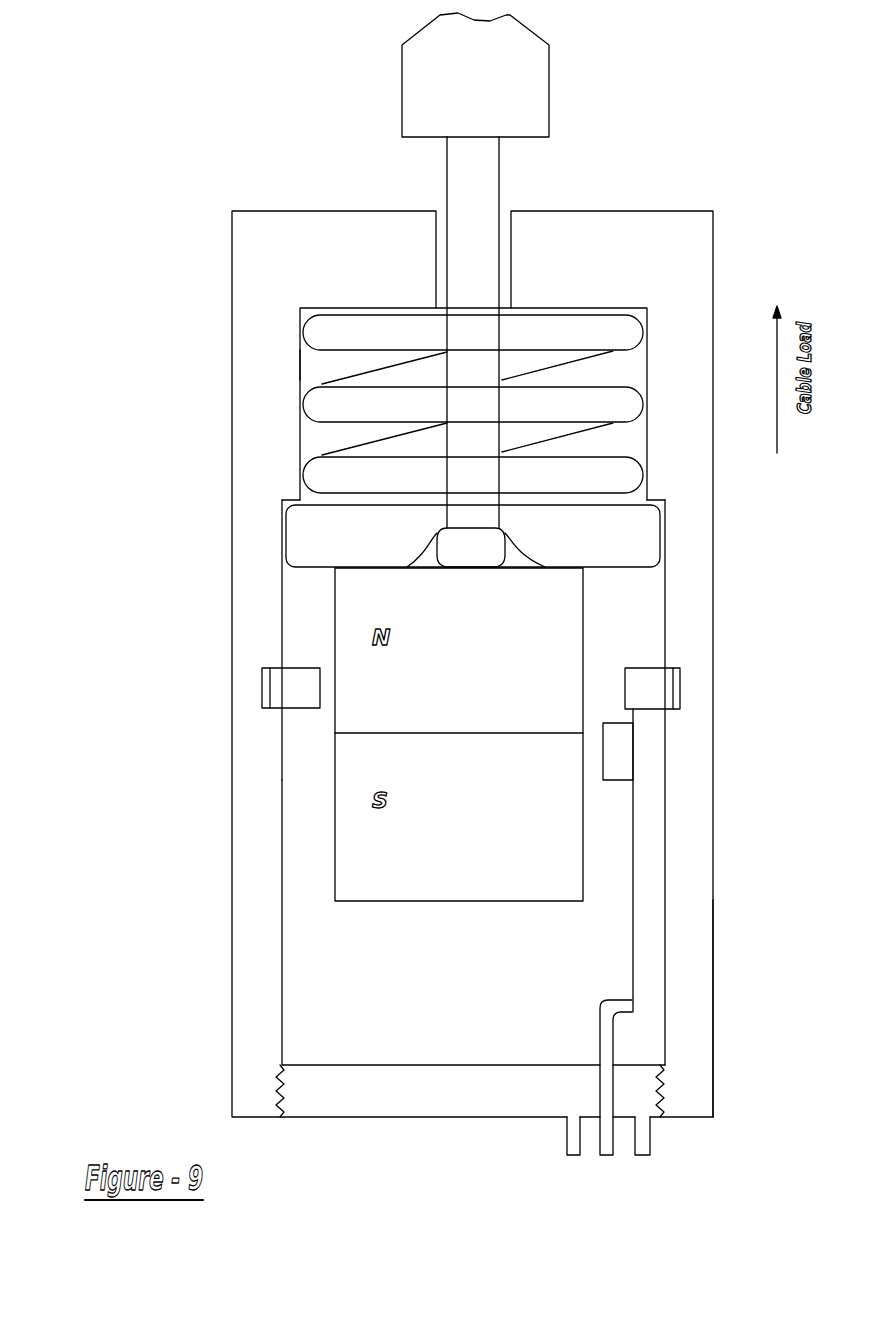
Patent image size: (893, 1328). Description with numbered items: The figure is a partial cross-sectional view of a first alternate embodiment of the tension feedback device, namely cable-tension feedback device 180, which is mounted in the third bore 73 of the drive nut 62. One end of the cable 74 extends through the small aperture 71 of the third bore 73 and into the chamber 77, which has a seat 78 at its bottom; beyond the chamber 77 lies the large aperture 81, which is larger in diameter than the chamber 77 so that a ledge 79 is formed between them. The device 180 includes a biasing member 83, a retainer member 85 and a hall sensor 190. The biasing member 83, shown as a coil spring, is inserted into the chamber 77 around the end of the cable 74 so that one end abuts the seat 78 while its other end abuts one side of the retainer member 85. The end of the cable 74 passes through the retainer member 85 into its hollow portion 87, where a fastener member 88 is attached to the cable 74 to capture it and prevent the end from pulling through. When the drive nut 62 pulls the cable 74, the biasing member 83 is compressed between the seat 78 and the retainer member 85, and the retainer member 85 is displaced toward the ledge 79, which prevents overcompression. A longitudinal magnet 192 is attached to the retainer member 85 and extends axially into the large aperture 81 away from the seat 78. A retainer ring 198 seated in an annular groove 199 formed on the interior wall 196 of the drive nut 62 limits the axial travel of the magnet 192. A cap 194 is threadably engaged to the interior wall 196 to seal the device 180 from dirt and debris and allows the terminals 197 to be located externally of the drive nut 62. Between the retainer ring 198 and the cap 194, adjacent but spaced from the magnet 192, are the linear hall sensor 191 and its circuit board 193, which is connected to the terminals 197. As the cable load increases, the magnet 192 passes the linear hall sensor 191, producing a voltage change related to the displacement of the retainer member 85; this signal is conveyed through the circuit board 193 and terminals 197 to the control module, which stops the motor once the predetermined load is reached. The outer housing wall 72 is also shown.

The drive nut 62 is at (253, 223).
The cable-tension feedback device 180 is at (139, 288).
The cable 74 is at (445, 153).
The small aperture 71 is at (434, 236).
The seat 78 is at (345, 310).
The biasing member 83 is at (300, 328).
The chamber 77 is at (301, 355).
The ledge 79 is at (288, 500).
The retainer member 85 is at (284, 515).
The hollow portion 87 is at (437, 535).
The fastener member 88 is at (500, 553).
The third bore 73 is at (282, 592).
The large aperture 81 is at (282, 840).
The longitudinal magnet 192 is at (350, 597).
The retainer ring 198 is at (643, 668).
The annular groove 199 is at (680, 687).
The linear hall sensor 191 is at (625, 752).
The circuit board 193 is at (655, 808).
The interior wall 196 is at (665, 933).
The housing wall 72 is at (712, 992).
The cap 194 is at (453, 1105).
The terminals 197 is at (607, 1157).
The hall sensor 190 is at (189, 943).